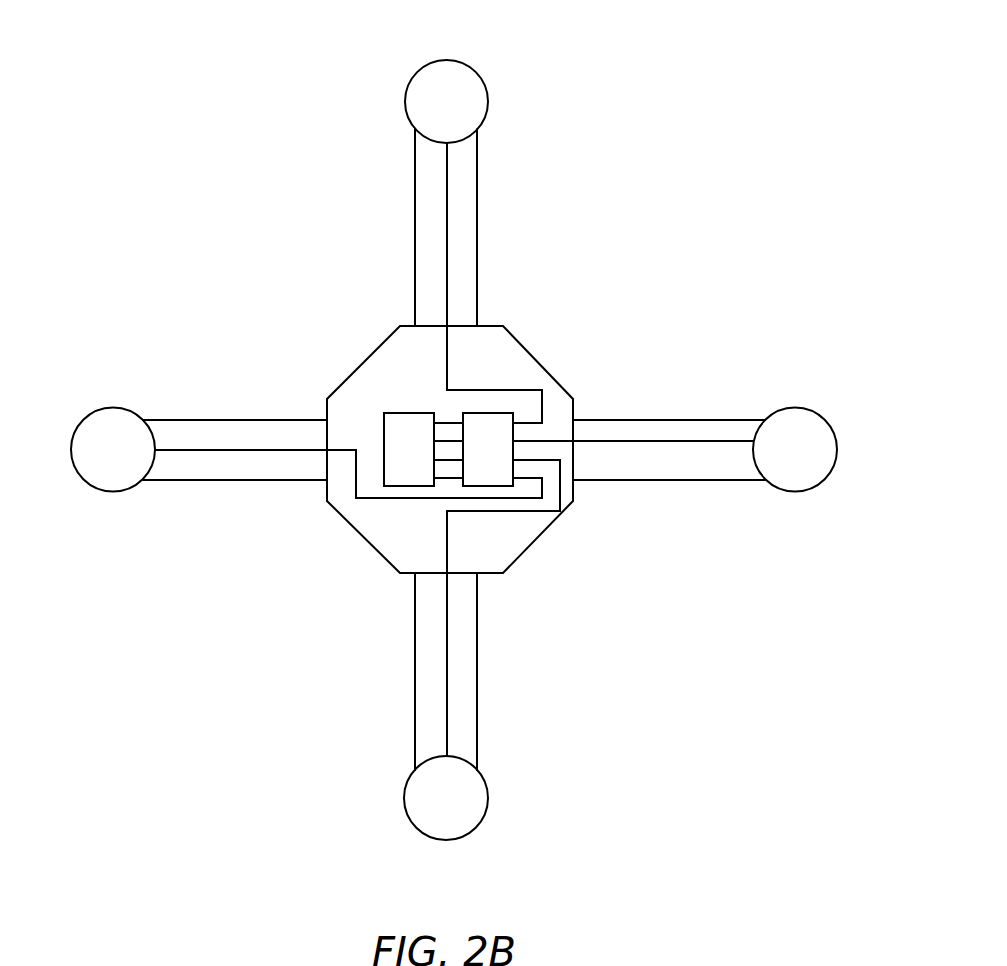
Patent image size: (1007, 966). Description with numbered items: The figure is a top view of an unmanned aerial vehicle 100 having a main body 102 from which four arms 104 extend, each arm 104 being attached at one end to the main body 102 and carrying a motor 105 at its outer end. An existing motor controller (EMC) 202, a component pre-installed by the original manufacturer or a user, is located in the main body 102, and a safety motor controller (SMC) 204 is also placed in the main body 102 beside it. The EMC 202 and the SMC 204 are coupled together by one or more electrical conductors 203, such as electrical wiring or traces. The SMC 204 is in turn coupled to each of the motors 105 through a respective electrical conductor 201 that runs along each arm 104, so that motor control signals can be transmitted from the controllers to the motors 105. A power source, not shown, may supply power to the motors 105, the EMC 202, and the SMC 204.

The unmanned aerial vehicle 100 is at (210, 140).
The main body 102 is at (543, 530).
The arm 104 is at (415, 248).
The motor 105 is at (470, 62).
The electrical conductor 201 is at (447, 215).
The existing motor controller (EMC) 202 is at (413, 410).
The electrical conductor 203 is at (453, 420).
The safety motor controller (SMC) 204 is at (498, 406).